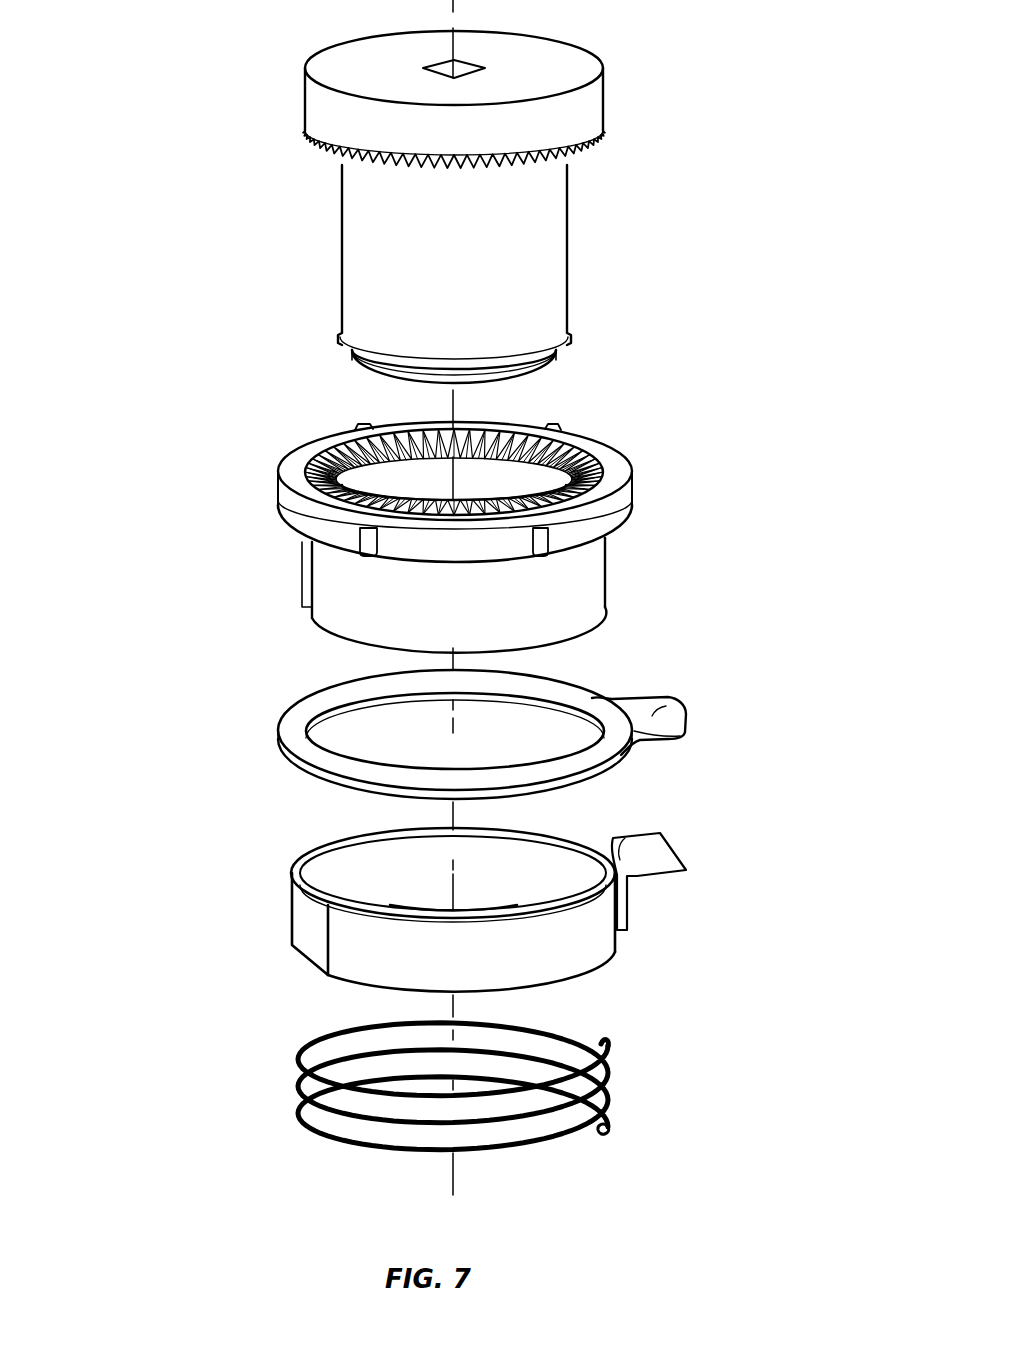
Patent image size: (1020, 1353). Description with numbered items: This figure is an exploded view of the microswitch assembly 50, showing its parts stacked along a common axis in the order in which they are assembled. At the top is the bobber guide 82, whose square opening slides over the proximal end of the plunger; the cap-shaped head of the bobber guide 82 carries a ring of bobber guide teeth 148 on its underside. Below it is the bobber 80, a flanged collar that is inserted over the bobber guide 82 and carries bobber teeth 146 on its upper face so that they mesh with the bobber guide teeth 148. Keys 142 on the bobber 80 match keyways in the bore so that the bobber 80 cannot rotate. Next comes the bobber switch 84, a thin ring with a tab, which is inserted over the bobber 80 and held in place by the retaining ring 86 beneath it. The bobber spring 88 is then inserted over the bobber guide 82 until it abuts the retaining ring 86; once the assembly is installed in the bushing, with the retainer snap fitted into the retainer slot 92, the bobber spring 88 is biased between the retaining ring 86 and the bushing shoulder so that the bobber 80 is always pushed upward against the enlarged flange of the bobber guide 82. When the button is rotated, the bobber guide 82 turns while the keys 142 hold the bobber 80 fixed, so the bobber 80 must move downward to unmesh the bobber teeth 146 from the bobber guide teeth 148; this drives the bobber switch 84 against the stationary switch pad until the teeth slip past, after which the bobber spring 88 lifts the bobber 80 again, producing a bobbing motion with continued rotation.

The microswitch assembly 50 is at (642, 273).
The bobber 80 is at (290, 567).
The bobber guide 82 is at (287, 240).
The bobber switch 84 is at (673, 704).
The retaining ring 86 is at (287, 903).
The bobber spring 88 is at (287, 1080).
The retainer slot 92 is at (603, 98).
The keys 142 is at (357, 427).
The bobber teeth 146 is at (568, 433).
The bobber guide teeth 148 is at (595, 159).